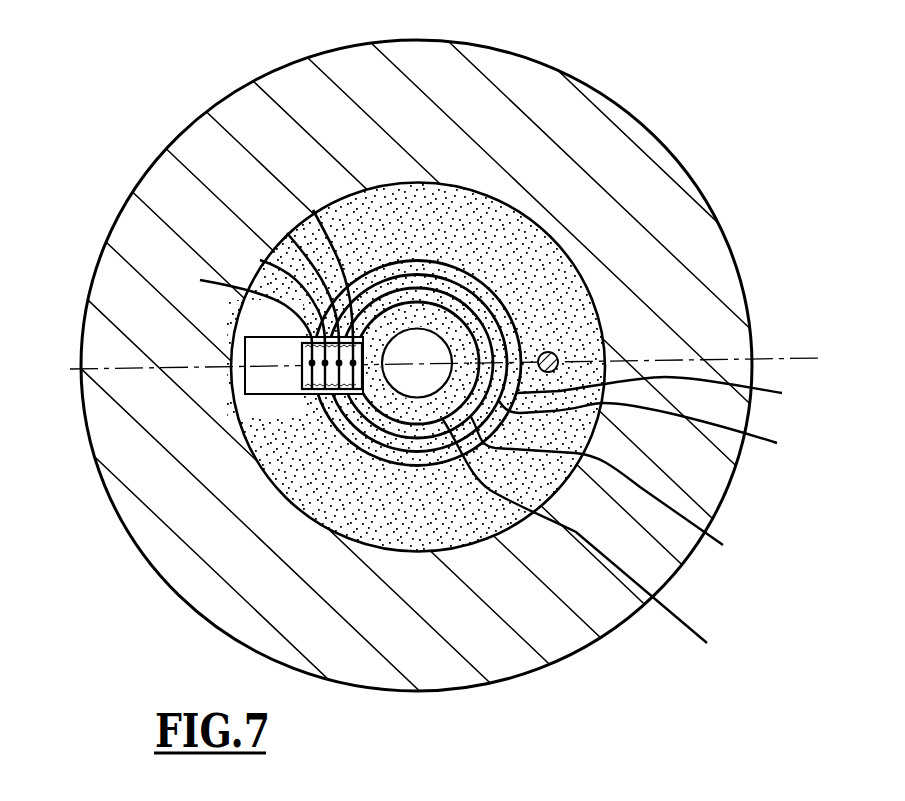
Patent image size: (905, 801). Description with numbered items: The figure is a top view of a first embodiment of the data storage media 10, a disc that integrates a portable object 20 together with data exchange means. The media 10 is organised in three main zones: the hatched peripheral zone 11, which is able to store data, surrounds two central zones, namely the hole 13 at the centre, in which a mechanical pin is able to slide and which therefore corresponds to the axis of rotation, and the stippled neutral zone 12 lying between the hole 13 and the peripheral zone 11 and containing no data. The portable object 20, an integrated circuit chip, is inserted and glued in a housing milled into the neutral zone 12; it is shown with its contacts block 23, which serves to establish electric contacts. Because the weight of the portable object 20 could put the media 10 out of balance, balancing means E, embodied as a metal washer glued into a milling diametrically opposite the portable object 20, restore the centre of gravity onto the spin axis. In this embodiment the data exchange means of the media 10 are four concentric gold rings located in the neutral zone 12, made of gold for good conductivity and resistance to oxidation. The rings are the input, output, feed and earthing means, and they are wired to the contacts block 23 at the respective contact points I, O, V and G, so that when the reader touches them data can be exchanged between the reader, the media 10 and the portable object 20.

The data storage media 10 is at (625, 103).
The peripheral zone 11 is at (543, 620).
The neutral zone 12 is at (381, 518).
The hole 13 is at (404, 372).
The portable object 20 is at (263, 381).
The contacts block 23 is at (308, 396).
The balancing means E is at (548, 352).
The contact point O is at (200, 280).
The contact point I is at (260, 260).
The contact point G is at (287, 233).
The contact point V is at (313, 210).